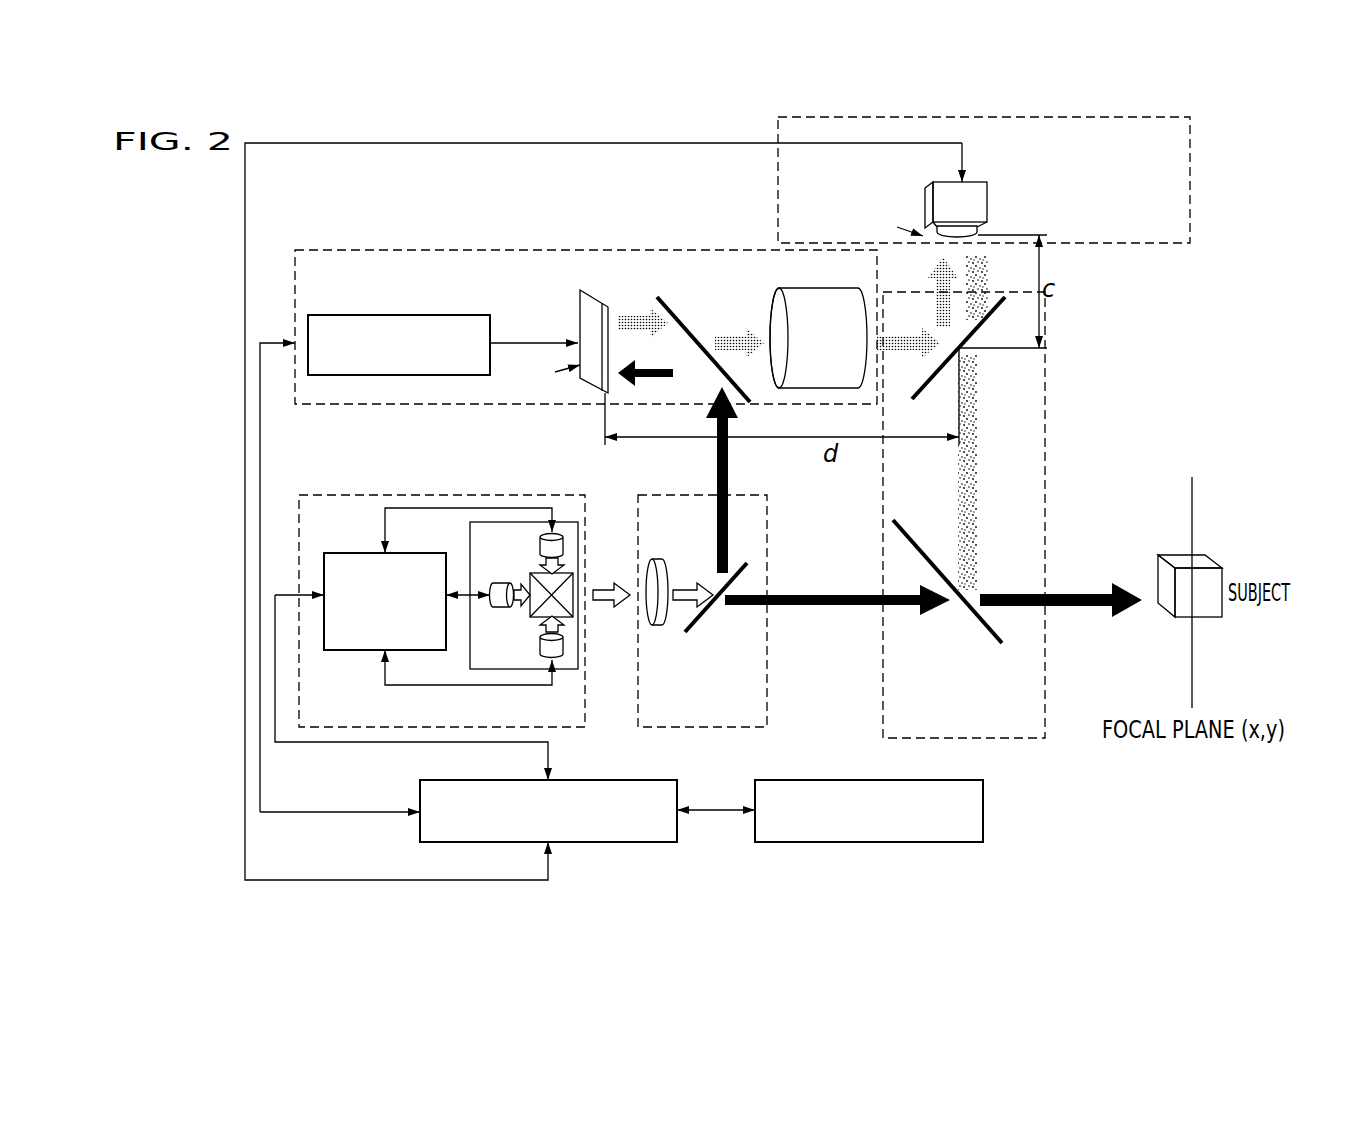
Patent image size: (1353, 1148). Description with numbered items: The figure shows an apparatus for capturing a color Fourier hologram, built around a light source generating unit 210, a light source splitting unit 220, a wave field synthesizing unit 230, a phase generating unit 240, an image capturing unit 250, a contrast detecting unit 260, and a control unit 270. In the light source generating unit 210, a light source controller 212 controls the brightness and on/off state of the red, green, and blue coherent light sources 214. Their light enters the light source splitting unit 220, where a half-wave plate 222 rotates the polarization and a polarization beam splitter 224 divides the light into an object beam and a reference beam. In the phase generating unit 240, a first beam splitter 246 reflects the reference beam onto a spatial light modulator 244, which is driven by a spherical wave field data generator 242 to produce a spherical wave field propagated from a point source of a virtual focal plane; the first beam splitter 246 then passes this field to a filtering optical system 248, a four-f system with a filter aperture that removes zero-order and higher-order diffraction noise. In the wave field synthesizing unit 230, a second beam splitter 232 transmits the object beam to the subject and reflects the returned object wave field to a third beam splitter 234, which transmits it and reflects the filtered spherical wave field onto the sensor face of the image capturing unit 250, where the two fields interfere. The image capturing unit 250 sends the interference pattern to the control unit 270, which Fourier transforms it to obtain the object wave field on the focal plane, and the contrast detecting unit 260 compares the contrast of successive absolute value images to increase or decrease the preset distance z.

The light source generating unit 210 is at (453, 493).
The light source controller 212 is at (335, 553).
The coherent light source 214 is at (470, 538).
The light source splitting unit 220 is at (732, 728).
The half-wave plate 222 is at (658, 556).
The polarization beam splitter 224 is at (745, 567).
The wave field synthesizing unit 230 is at (1010, 740).
The BS2 232 is at (1002, 630).
The BS3 234 is at (984, 325).
The phase generating unit 240 is at (478, 250).
The spherical wave field data generator 242 is at (331, 315).
The spatial light modulator 244 is at (600, 290).
The beam splitter 1 246 is at (671, 308).
The filtering optical system 248 is at (800, 292).
The image capturing unit 250 is at (1190, 135).
The contrast detecting unit 260 is at (870, 844).
The control unit 270 is at (645, 844).